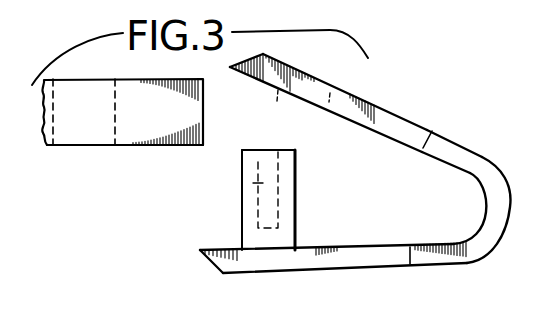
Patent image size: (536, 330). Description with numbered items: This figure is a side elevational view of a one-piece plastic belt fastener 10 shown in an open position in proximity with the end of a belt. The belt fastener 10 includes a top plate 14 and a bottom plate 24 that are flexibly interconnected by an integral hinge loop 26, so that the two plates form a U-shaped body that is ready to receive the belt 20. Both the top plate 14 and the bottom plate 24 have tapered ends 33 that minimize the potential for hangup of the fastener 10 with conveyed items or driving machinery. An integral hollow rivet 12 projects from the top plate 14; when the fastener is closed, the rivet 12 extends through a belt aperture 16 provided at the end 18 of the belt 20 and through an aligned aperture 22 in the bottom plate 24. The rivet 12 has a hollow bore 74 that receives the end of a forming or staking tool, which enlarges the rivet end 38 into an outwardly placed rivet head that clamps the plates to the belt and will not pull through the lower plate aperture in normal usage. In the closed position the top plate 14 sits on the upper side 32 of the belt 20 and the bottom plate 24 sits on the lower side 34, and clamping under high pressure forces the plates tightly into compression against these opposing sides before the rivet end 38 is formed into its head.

The belt fastener 10 is at (458, 122).
The hollow rivet 12 is at (245, 212).
The top plate 14 is at (258, 262).
The belt aperture 16 is at (92, 114).
The belt end 18 is at (204, 122).
The belt 20 is at (196, 110).
The lower plate aperture 22 is at (328, 103).
The bottom plate 24 is at (371, 101).
The hinge loop 26 is at (476, 242).
The upper side of the belt 32 is at (145, 146).
The tapered end 33 is at (231, 67).
The lower side of the belt 34 is at (125, 79).
The rivet end 38 is at (287, 150).
The hollow bore 74 is at (253, 186).